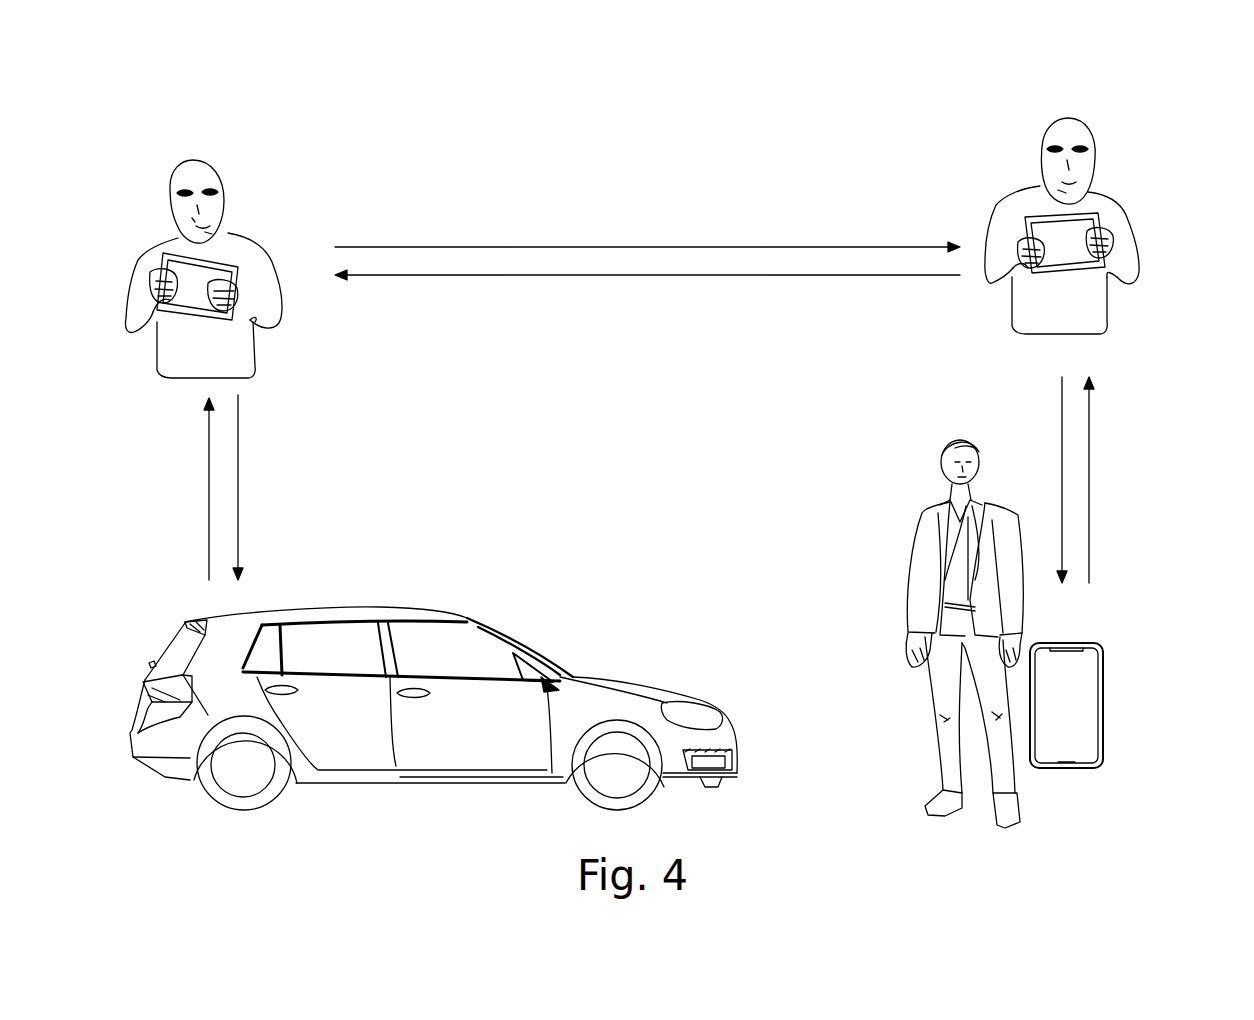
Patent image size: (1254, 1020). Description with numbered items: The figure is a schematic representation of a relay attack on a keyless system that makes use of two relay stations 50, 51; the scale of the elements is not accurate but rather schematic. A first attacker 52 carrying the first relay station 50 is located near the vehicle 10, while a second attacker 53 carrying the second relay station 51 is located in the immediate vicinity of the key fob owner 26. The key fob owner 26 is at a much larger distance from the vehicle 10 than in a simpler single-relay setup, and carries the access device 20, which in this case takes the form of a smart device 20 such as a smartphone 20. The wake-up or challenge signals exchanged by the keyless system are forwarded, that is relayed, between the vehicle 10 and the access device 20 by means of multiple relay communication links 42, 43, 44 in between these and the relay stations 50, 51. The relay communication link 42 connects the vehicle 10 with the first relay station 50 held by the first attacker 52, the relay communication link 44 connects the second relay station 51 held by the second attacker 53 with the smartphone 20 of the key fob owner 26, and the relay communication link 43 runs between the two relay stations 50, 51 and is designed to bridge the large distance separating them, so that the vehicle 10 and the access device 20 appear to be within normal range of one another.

The vehicle 10 is at (403, 608).
The access device 20 is at (1103, 695).
The key fob owner 26 is at (957, 440).
The relay communication link 42 is at (238, 442).
The relay communication link 43 is at (590, 246).
The relay communication link 44 is at (1090, 442).
The first relay station 50 is at (227, 247).
The second relay station 51 is at (1090, 206).
The first attacker 52 is at (193, 160).
The second attacker 53 is at (1068, 118).